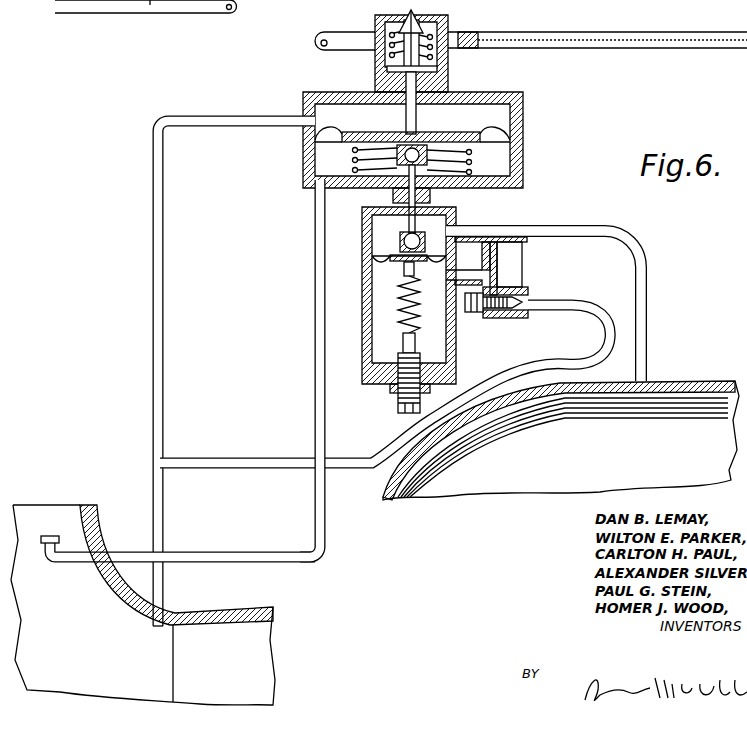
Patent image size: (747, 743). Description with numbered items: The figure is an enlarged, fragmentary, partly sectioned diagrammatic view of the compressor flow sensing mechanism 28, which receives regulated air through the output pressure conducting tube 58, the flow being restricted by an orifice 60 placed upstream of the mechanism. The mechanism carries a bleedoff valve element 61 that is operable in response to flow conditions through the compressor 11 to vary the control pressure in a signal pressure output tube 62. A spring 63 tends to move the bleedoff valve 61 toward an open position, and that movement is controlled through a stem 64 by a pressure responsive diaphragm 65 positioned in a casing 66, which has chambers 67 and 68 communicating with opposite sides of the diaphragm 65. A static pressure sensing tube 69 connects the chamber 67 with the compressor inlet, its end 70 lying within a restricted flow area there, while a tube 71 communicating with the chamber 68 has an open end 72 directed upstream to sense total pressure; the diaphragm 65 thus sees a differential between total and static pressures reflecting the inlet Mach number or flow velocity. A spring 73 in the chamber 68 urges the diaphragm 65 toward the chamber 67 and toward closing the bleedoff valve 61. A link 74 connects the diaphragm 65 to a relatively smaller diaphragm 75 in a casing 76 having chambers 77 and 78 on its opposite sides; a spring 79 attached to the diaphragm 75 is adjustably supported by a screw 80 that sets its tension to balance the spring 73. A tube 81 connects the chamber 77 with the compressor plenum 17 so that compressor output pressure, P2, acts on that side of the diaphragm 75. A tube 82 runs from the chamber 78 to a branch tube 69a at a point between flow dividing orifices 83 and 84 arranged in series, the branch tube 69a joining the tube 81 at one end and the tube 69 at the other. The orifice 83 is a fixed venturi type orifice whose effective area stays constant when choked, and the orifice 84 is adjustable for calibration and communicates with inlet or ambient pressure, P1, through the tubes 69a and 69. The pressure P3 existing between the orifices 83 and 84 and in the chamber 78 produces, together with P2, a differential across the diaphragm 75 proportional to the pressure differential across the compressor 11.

The compressor 11 is at (258, 669).
The compressor plenum 17 is at (672, 400).
The compressor flow sensing mechanism 28 is at (566, 154).
The output pressure conducting tube 58 is at (527, 32).
The orifice 60 is at (478, 35).
The bleedoff valve element 61 is at (421, 6).
The signal pressure output tube 62 is at (356, 16).
The spring 63 is at (430, 30).
The stem 64 is at (430, 78).
The pressure responsive diaphragm 65 is at (492, 128).
The casing 66 is at (523, 125).
The chamber 67 is at (367, 120).
The chamber 68 is at (512, 165).
The static pressure sensing tube 69 is at (205, 116).
The branch tube 69a is at (574, 302).
The end of tube 69 70 is at (155, 632).
The tube 71 is at (316, 303).
The open end 72 is at (58, 536).
The spring 73 is at (470, 190).
The link 74 is at (400, 207).
The smaller diaphragm 75 is at (378, 262).
The casing 76 is at (452, 326).
The chamber 77 is at (373, 236).
The chamber 78 is at (372, 322).
The spring 79 is at (406, 312).
The screw 80 is at (398, 404).
The tube 81 is at (633, 247).
The tube 82 is at (486, 261).
The flow dividing orifice 83 is at (497, 256).
The flow dividing orifice 84 is at (522, 290).
The compressor inlet pressure P1 is at (134, 688).
The compressor outlet plenum pressure P2 is at (614, 446).
The intermediate pressure P3 is at (516, 268).